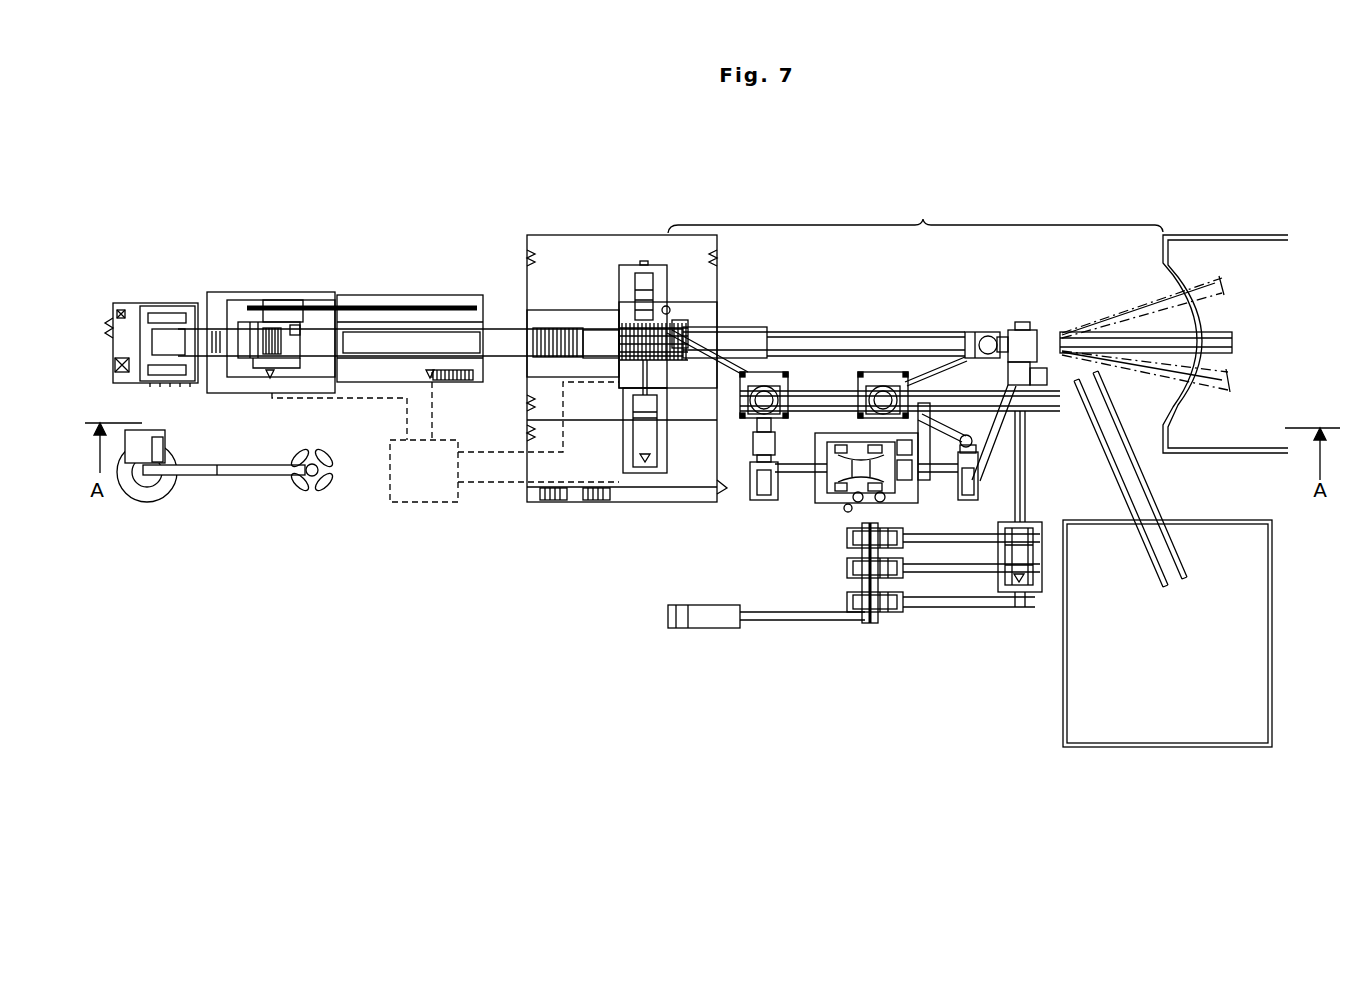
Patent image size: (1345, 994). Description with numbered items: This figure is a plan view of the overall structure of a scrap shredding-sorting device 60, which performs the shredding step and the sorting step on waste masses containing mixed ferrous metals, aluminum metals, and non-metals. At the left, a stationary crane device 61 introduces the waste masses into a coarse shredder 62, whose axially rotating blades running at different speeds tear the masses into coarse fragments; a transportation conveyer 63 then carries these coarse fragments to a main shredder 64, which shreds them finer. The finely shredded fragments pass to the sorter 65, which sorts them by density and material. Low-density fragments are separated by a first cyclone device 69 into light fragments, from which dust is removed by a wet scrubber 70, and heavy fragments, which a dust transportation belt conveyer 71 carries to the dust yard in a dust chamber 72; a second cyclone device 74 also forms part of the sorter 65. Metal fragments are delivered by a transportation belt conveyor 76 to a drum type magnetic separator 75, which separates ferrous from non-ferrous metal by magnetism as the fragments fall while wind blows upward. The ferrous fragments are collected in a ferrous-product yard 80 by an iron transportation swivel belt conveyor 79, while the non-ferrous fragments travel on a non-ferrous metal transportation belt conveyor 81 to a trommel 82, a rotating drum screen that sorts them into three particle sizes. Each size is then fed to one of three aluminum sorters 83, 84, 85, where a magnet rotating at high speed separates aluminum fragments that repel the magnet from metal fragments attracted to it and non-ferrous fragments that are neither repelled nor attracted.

The scrap shredding-sorting device 60 is at (720, 193).
The stationary crane device 61 is at (147, 490).
The coarse shredder 62 is at (272, 291).
The transportation conveyer 63 is at (308, 343).
The main shredder 64 is at (657, 303).
The sorter 65 is at (915, 303).
The first cyclone device 69 is at (733, 487).
The wet scrubber 70 is at (838, 495).
The dust transportation belt conveyer 71 is at (1147, 502).
The dust chamber 72 is at (1170, 748).
The second cyclone device 74 is at (878, 380).
The drum type magnetic separator 75 is at (1023, 331).
The transportation belt conveyor 76 is at (830, 333).
The iron transportation swivel belt conveyor 79 is at (1220, 330).
The ferrous-product yard 80 is at (1230, 235).
The non-ferrous metal transportation belt conveyor 81 is at (1028, 455).
The trommel 82 is at (1038, 590).
The aluminum sorter 83 is at (862, 522).
The aluminum sorter 84 is at (890, 620).
The aluminum sorter 85 is at (865, 621).